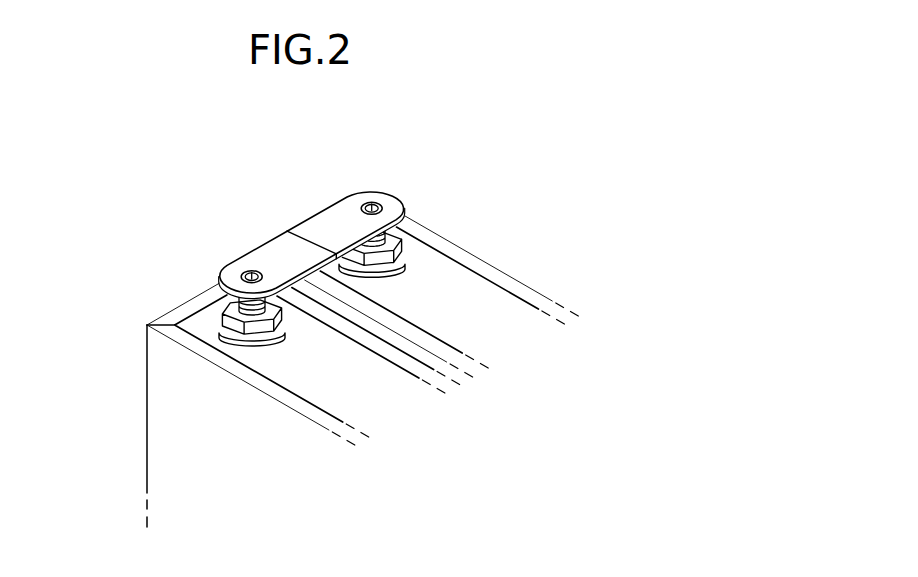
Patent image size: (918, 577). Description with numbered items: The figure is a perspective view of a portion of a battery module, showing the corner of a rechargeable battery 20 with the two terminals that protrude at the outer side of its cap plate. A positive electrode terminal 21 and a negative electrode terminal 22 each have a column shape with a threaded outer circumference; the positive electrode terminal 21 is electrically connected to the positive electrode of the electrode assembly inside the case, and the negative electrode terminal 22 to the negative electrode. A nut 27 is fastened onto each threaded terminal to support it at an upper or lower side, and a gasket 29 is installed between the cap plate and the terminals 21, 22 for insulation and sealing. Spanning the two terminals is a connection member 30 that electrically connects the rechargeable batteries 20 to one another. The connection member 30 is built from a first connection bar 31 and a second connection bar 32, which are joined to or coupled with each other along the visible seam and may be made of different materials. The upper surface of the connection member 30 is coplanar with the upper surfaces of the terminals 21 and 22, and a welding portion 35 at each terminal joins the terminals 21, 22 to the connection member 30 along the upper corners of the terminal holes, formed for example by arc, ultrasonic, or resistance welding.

The rechargeable battery 20 is at (146, 425).
The positive electrode terminal 21 is at (250, 274).
The negative electrode terminal 22 is at (369, 204).
The nut 27 is at (223, 310).
The gasket 29 is at (214, 325).
The connection member 30 is at (312, 219).
The first connection bar 31 is at (327, 220).
The second connection bar 32 is at (280, 252).
The welding portion 35 is at (242, 275).